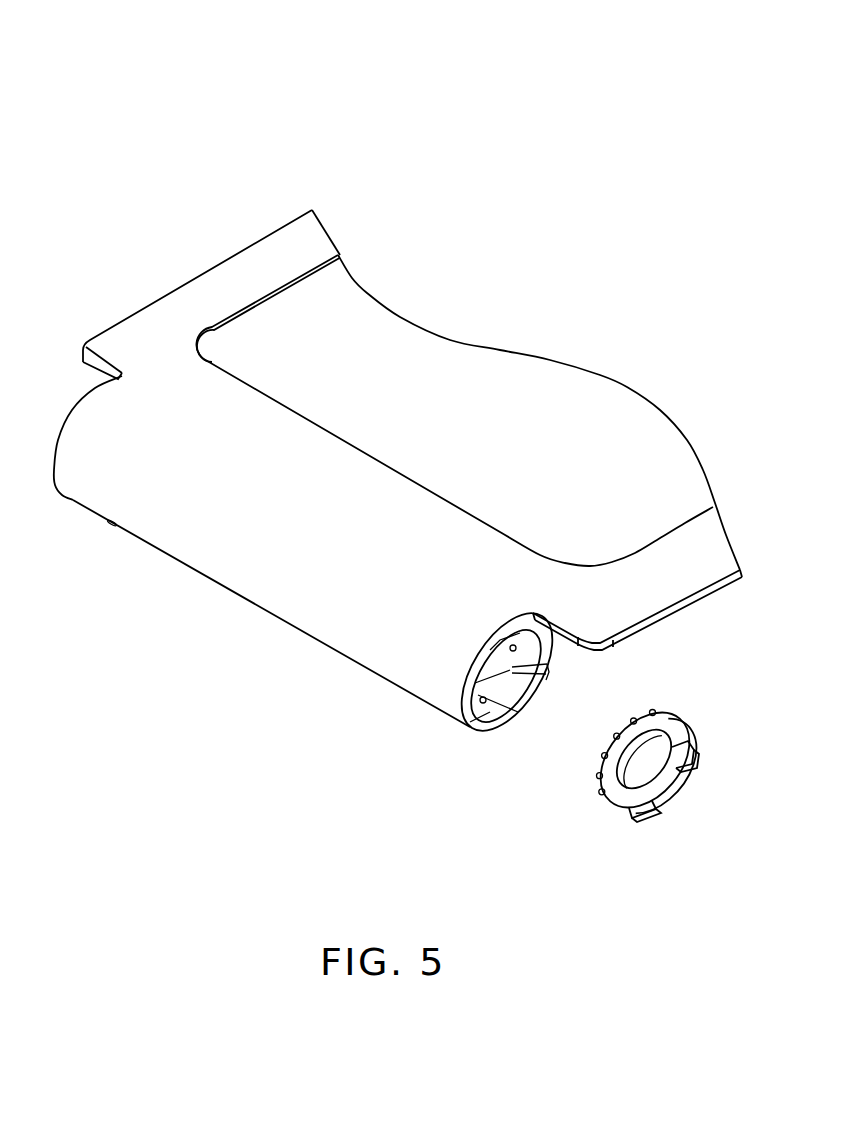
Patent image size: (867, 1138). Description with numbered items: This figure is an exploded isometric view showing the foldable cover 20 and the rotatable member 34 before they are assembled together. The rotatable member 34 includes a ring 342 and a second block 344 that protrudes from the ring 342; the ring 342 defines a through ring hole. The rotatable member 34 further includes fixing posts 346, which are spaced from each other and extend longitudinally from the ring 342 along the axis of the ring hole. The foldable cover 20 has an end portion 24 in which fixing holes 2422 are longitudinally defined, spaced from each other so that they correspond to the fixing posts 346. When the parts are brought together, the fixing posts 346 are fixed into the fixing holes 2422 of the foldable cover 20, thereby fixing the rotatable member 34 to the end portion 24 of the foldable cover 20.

The foldable cover 20 is at (272, 102).
The end portion 24 is at (198, 512).
The fixing holes 2422 is at (473, 722).
The rotatable member 34 is at (700, 742).
The ring 342 is at (662, 722).
The second block 344 is at (667, 773).
The fixing posts 346 is at (597, 771).